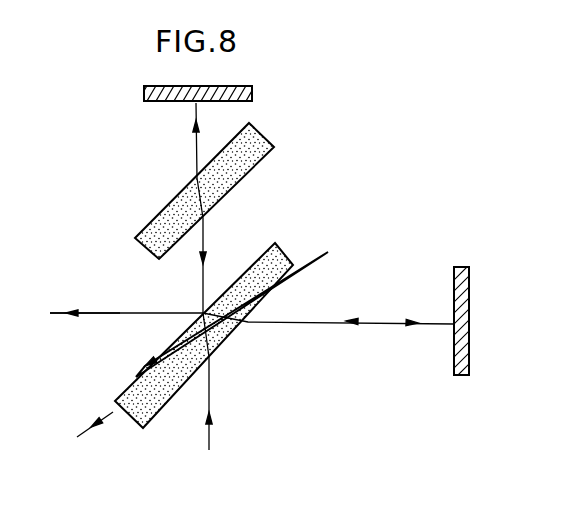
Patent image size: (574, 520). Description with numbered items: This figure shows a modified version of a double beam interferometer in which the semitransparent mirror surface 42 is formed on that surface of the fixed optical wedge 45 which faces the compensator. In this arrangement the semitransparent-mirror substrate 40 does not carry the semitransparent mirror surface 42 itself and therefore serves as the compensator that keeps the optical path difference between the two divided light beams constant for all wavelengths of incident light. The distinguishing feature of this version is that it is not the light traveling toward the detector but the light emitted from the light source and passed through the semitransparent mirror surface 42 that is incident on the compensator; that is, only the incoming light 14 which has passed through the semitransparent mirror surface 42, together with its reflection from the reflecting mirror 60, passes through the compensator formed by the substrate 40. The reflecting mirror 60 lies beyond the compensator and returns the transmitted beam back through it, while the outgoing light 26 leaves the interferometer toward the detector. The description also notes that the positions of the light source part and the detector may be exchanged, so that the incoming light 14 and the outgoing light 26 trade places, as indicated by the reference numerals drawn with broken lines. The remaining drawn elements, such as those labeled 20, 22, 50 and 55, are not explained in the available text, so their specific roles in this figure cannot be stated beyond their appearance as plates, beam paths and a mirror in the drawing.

The incoming light 14 is at (210, 438).
The horizontal beam path 20 is at (334, 326).
The beam splitter plate 22 is at (197, 157).
The outgoing light 26 is at (93, 315).
The semitransparent-mirror substrate 40 is at (137, 247).
The semitransparent mirror surface 42 is at (268, 247).
The fixed optical wedge 45 is at (292, 262).
The mirror 50 is at (453, 362).
The reflected ray 55 is at (157, 403).
The reflecting mirror 60 is at (155, 101).